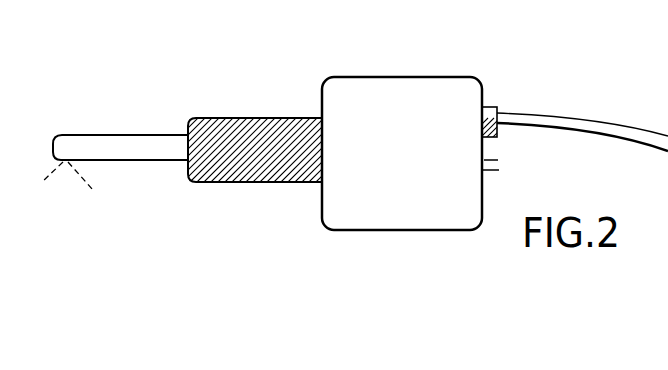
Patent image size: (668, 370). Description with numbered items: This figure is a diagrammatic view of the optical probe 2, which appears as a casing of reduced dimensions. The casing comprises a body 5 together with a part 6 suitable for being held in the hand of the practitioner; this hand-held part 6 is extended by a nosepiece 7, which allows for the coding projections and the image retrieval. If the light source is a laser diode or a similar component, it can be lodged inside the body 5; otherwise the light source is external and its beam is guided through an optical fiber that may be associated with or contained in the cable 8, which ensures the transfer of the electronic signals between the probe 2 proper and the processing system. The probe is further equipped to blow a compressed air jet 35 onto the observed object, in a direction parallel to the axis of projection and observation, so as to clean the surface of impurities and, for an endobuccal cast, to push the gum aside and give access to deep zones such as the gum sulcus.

The optical probe 2 is at (255, 200).
The body 5 is at (345, 192).
The part suitable for holding in the hand 6 is at (246, 135).
The nosepiece 7 is at (112, 143).
The cable 8 is at (610, 130).
The compressed air jet 35 is at (94, 191).